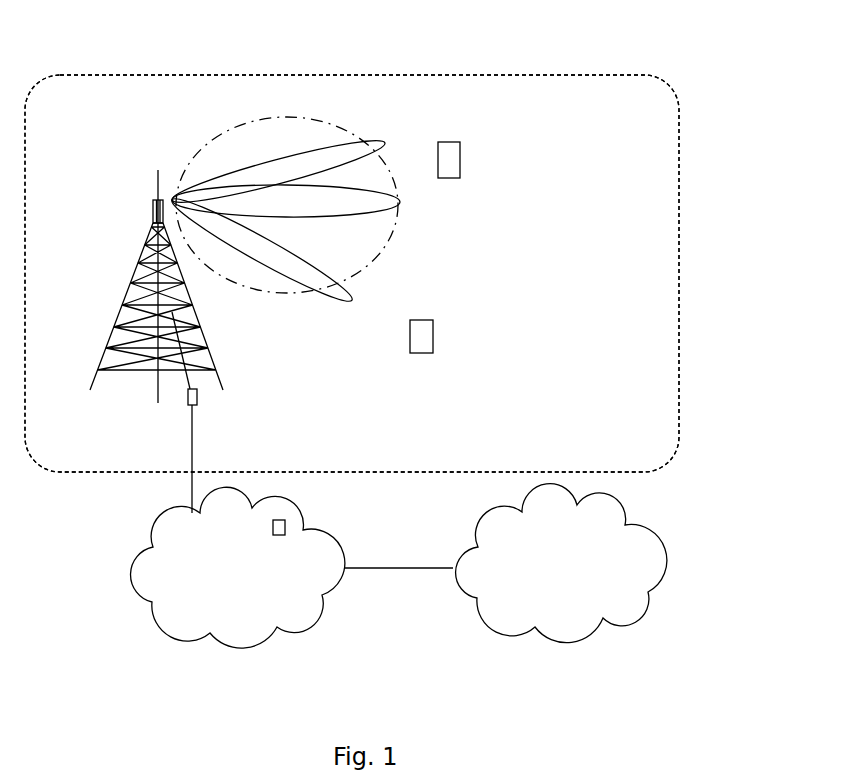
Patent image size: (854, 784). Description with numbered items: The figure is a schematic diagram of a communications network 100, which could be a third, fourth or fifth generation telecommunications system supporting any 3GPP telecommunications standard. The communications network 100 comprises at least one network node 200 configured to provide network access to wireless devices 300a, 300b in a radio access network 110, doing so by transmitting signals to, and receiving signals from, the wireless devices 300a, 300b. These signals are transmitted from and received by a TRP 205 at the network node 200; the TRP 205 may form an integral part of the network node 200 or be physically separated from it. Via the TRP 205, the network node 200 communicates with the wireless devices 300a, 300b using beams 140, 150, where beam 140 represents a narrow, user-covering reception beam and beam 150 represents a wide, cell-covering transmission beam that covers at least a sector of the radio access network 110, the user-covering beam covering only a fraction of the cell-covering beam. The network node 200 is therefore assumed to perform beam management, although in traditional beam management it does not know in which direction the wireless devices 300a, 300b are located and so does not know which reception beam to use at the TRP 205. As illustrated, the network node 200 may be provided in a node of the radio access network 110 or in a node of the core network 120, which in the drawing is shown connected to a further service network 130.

The communications network 100 is at (650, 40).
The radio access network 110 is at (90, 118).
The core network 120 is at (242, 549).
The service network 130 is at (575, 534).
The beam 140 is at (274, 157).
The beam 150 is at (283, 293).
The network node 200 is at (188, 398).
The TRP 205 is at (152, 207).
The wireless device 300a is at (440, 178).
The wireless device 300b is at (412, 353).